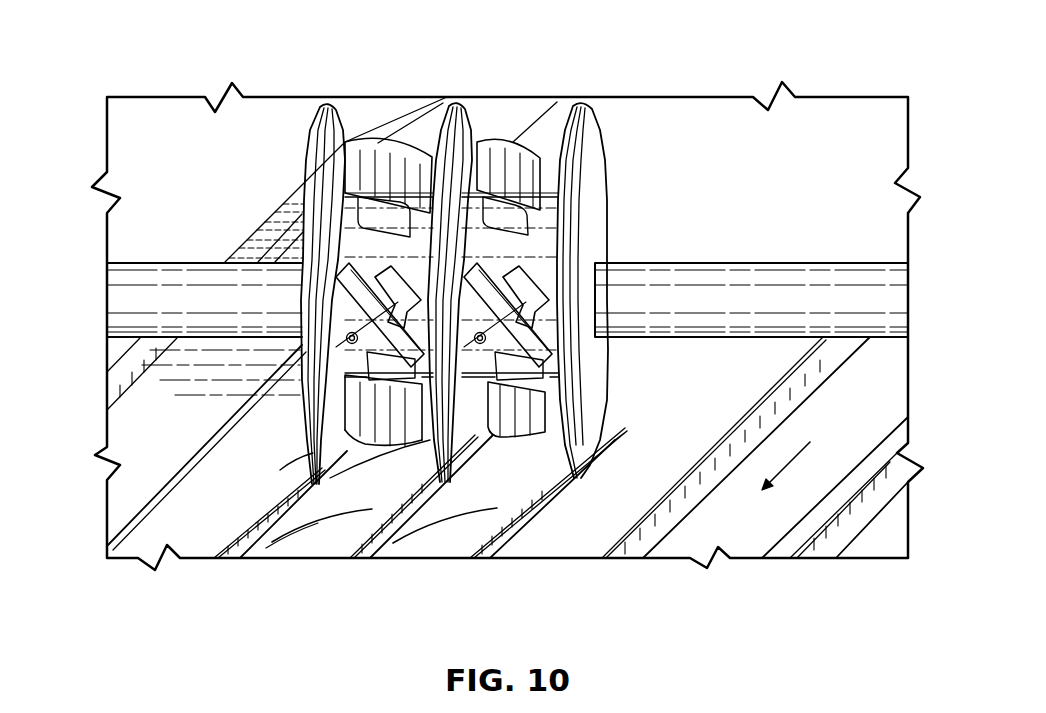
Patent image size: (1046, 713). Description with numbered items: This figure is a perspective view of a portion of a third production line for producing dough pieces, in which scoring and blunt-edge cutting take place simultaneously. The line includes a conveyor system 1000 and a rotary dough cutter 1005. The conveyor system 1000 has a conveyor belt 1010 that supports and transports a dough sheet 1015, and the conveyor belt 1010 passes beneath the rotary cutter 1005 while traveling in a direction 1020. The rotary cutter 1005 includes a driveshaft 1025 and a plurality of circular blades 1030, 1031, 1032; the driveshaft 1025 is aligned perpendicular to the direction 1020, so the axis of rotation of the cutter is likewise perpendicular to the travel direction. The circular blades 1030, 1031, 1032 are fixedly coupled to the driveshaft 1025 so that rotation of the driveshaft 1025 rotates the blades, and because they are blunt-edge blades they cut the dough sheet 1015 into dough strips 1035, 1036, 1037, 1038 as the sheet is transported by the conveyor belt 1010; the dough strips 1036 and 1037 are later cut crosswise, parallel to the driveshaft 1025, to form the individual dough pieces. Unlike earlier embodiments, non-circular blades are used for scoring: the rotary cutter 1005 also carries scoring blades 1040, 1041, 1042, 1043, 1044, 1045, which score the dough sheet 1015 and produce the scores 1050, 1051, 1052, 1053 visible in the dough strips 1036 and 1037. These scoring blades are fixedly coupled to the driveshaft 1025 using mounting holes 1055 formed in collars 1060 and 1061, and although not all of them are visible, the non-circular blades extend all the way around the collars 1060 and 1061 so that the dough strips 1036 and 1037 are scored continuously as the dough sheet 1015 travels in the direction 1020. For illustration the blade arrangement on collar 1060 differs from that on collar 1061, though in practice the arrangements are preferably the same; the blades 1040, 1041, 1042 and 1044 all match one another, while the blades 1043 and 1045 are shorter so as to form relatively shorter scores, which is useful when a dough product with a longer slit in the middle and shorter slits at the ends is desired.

The conveyor system 1000 is at (250, 228).
The rotary dough cutter 1005 is at (747, 285).
The conveyor belt 1010 is at (120, 508).
The dough sheet 1015 is at (855, 120).
The direction 1020 is at (777, 478).
The driveshaft 1025 is at (893, 318).
The circular blade 1030 is at (347, 140).
The circular blade 1031 is at (466, 138).
The circular blade 1032 is at (598, 122).
The dough strip 1035 is at (193, 552).
The dough strip 1036 is at (278, 551).
The dough strip 1037 is at (411, 548).
The dough strip 1038 is at (560, 548).
The scoring blade 1040 is at (400, 150).
The scoring blade 1041 is at (330, 430).
The scoring blade 1042 is at (332, 448).
The scoring blade 1043 is at (527, 150).
The scoring blade 1044 is at (543, 343).
The scoring blade 1045 is at (547, 498).
The score 1050 is at (317, 515).
The score 1051 is at (356, 466).
The score 1052 is at (437, 543).
The score 1053 is at (517, 423).
The mounting hole 1055 is at (557, 140).
The collar 1060 is at (353, 252).
The collar 1061 is at (548, 268).